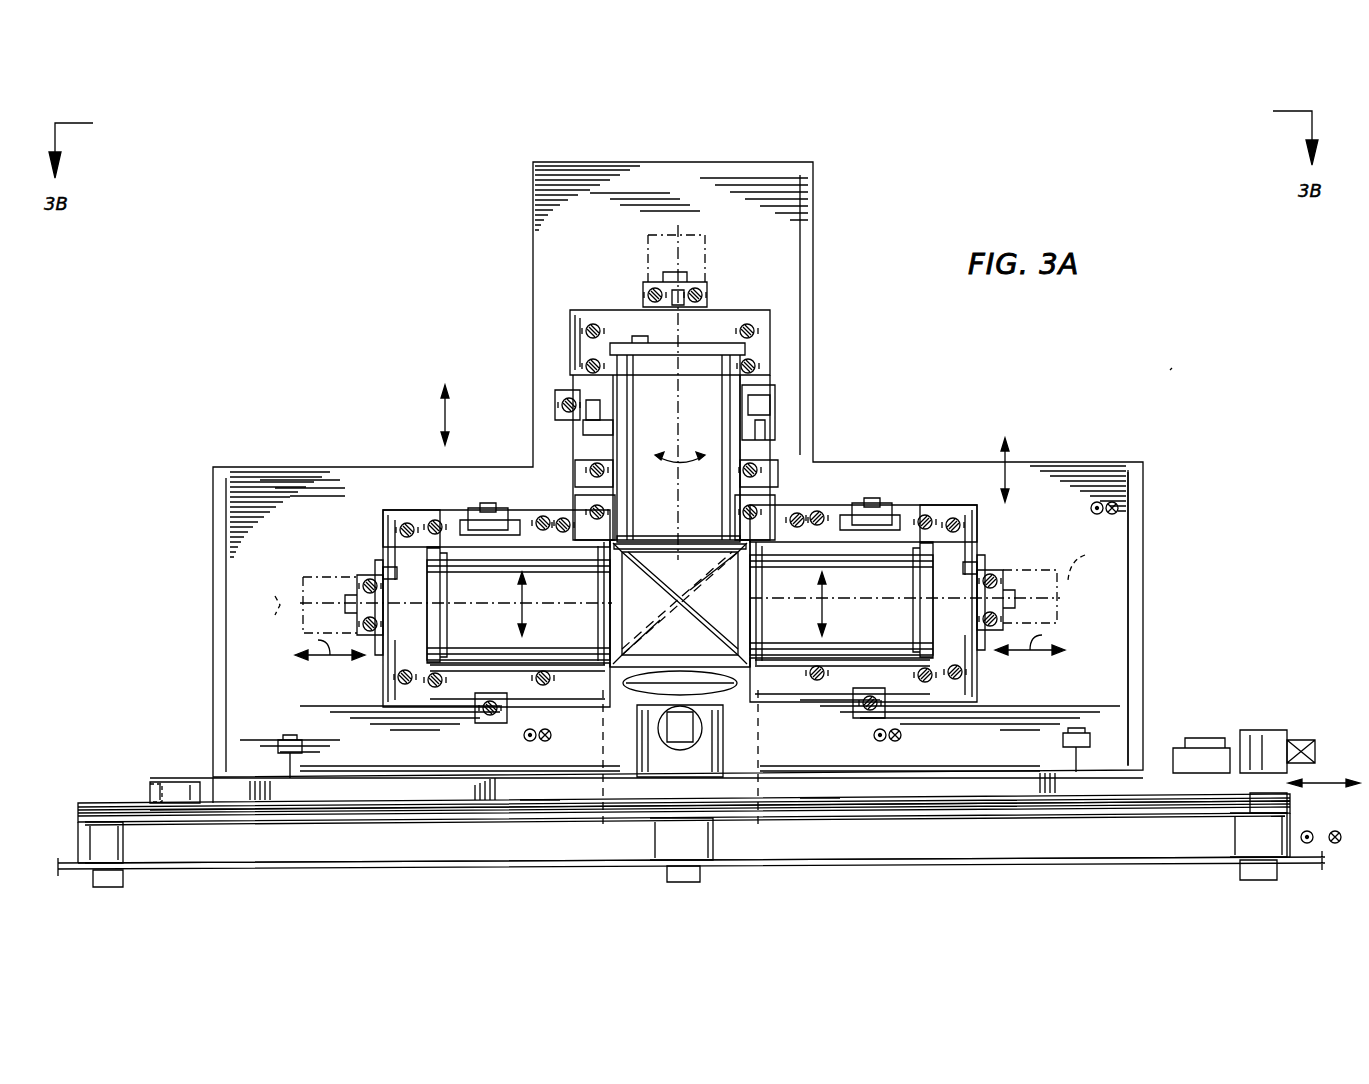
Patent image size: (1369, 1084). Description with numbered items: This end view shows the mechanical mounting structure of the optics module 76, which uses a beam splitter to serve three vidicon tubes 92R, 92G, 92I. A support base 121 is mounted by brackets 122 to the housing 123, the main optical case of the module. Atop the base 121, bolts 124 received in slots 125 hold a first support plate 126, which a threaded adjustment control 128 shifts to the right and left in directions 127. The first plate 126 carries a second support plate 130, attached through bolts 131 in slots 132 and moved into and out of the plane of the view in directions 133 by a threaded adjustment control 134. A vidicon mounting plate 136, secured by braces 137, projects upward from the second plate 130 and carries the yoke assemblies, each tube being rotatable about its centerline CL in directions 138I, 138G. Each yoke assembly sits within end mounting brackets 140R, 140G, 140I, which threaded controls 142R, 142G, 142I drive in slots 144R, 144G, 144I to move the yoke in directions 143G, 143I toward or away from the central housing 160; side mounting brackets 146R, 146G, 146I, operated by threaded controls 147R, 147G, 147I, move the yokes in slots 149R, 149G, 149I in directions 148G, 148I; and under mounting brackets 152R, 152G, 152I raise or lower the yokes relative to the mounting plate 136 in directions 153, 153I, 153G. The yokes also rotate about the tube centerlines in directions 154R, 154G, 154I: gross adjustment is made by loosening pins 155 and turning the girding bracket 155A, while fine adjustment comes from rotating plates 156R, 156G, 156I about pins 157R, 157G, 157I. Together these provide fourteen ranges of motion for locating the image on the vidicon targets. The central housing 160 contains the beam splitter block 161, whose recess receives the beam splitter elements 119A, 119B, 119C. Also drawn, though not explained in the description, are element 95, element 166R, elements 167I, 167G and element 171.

The optics module 76 is at (1172, 368).
The vidicon tube 92R is at (660, 240).
The vidicon tube 92G is at (1062, 595).
The vidicon tube 92I is at (335, 583).
The objective lens 95 is at (648, 690).
The beam splitter element 119A is at (680, 608).
The beam splitter element 119B is at (720, 573).
The beam splitter element 119C is at (637, 638).
The support base 121 is at (472, 818).
The brackets 122 is at (108, 866).
The housing 123 is at (392, 870).
The bolts 124 is at (178, 782).
The slots 125 is at (150, 788).
The first support plate 126 is at (530, 812).
The directions 127 is at (1325, 780).
The threaded adjustment control 128 is at (1262, 730).
The second support plate 130 is at (588, 812).
The bolts 131 is at (287, 740).
The slots 132 is at (268, 826).
The directions 133 is at (1325, 866).
The threaded adjustment control 134 is at (672, 745).
The vidicon mounting plate 136 is at (1150, 470).
The braces 137 is at (1138, 495).
The direction of rotation 138I is at (276, 600).
The direction of rotation 138G is at (1088, 556).
The end mounting bracket 140R is at (575, 332).
The end mounting bracket 140G is at (1100, 500).
The end mounting bracket 140I is at (392, 572).
The threaded control 142R is at (680, 288).
The threaded control 142G is at (1015, 600).
The threaded control 142I is at (345, 605).
The directions 143G is at (1065, 640).
The directions 143I is at (295, 655).
The slot 144R is at (595, 325).
The slot 144G is at (962, 522).
The slot 144I is at (405, 515).
The side mounting bracket 146R is at (762, 380).
The side mounting bracket 146G is at (900, 515).
The side mounting bracket 146I is at (470, 520).
The threaded control 147R is at (775, 405).
The threaded control 147G is at (872, 505).
The threaded control 147I is at (488, 508).
The directions 148G is at (1008, 458).
The directions 148I is at (440, 415).
The slots 149R is at (590, 465).
The slots 149G is at (814, 515).
The slots 149I is at (442, 545).
The under mounting bracket 152R is at (575, 362).
The under mounting bracket 152G is at (850, 700).
The under mounting bracket 152I is at (450, 702).
The directions 153 is at (1108, 500).
The directions 153I is at (538, 742).
The directions 153G is at (890, 742).
The directions 154R is at (670, 398).
The directions 154G is at (828, 596).
The directions 154I is at (518, 608).
The pins 155 is at (600, 405).
The bracket 155A is at (600, 428).
The plate 156R is at (712, 345).
The plate 156G is at (938, 578).
The plate 156I is at (425, 635).
The pin 157R is at (642, 342).
The pin 157G is at (968, 562).
The pin 157I is at (390, 568).
The central housing 160 is at (632, 589).
The beam splitter block 161 is at (680, 603).
The filter 166R is at (670, 537).
The filter 167I is at (605, 608).
The filter 167G is at (758, 610).
The centerline 171 is at (758, 826).